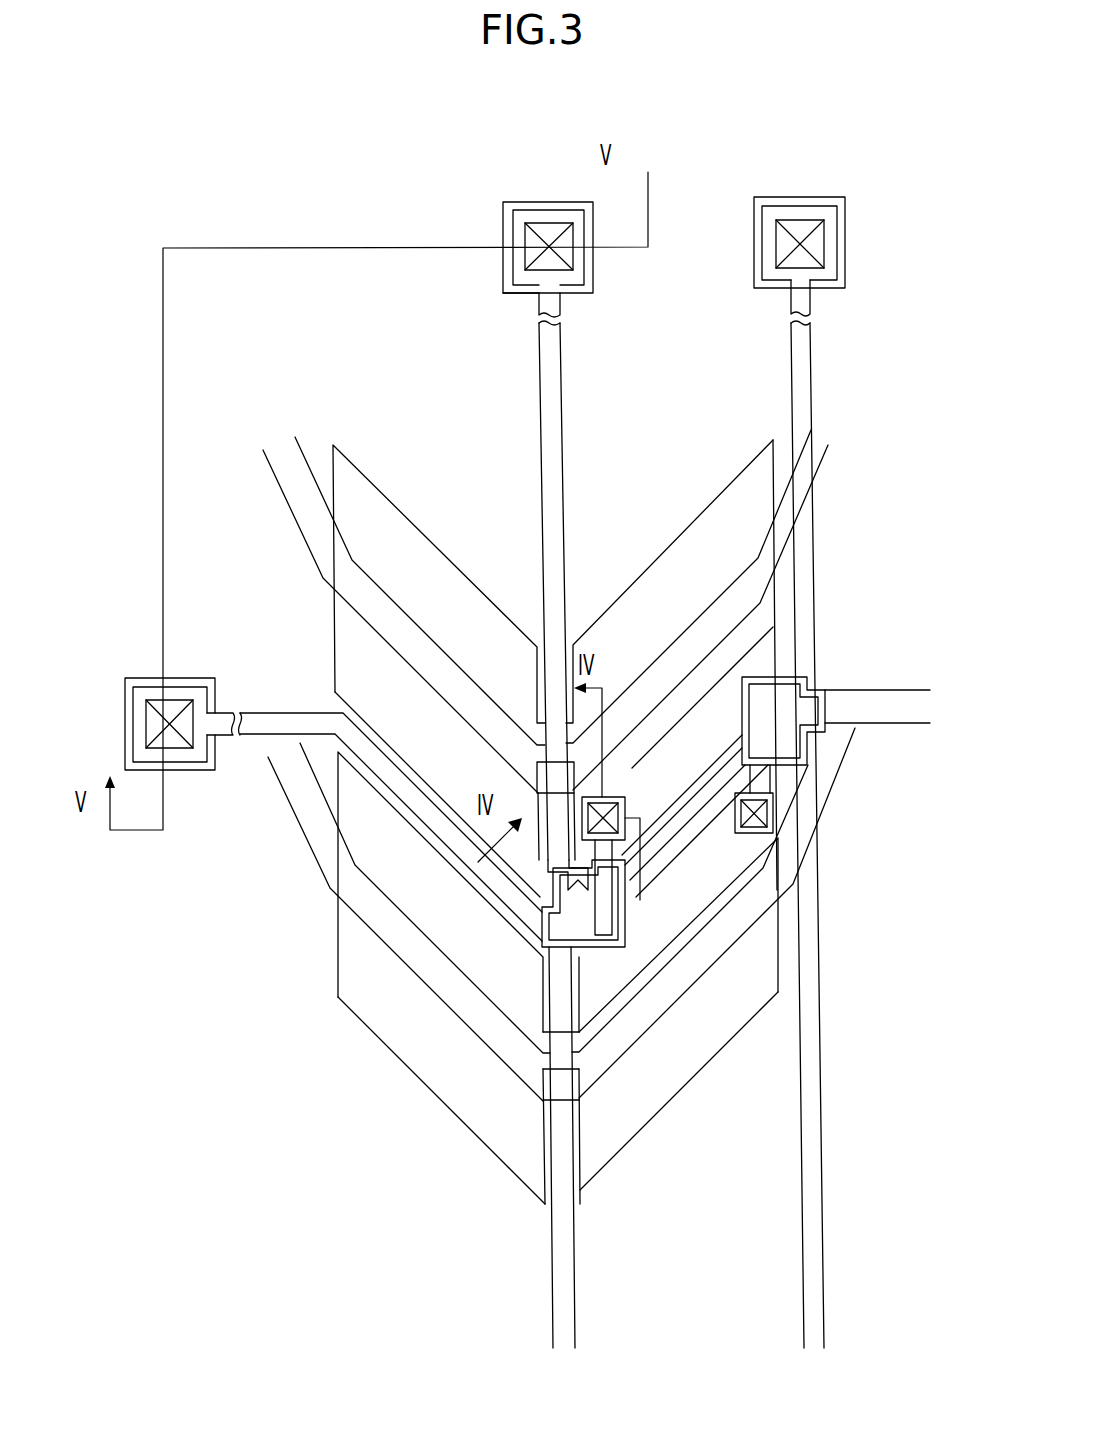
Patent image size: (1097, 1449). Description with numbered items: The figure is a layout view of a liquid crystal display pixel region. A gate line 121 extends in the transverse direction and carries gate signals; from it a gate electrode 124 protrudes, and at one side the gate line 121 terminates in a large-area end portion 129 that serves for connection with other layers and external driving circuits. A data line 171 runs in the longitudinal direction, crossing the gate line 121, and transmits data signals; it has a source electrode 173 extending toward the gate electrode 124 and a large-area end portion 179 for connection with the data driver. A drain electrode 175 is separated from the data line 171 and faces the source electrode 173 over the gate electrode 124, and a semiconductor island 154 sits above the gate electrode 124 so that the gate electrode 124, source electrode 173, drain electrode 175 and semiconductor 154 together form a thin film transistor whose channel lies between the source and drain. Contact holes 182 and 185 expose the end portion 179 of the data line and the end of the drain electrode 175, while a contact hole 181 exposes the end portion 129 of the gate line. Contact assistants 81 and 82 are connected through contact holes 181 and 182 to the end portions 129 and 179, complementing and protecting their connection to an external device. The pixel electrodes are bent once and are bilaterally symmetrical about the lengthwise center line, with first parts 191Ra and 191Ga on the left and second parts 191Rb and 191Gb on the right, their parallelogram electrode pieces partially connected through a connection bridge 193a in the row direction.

The contact assistant 81 is at (125, 723).
The contact assistant 82 is at (593, 277).
The gate line 121 is at (368, 775).
The gate electrode 124 is at (623, 922).
The end portion of gate line 129 is at (148, 685).
The semiconductor island 154 is at (537, 928).
The data line 171 is at (545, 453).
The source electrode 173 is at (593, 953).
The drain electrode 175 is at (617, 898).
The end portion of data line 179 is at (519, 212).
The contact hole 181 is at (182, 750).
The contact hole 182 is at (548, 222).
The contact hole 185 is at (615, 797).
The first part of pixel electrode 191Ra is at (392, 497).
The second part of pixel electrode 191Rb is at (713, 487).
The first part of pixel electrode 191Ga is at (485, 1140).
The second part of pixel electrode 191Gb is at (680, 1125).
The connection bridge 193a is at (570, 1062).